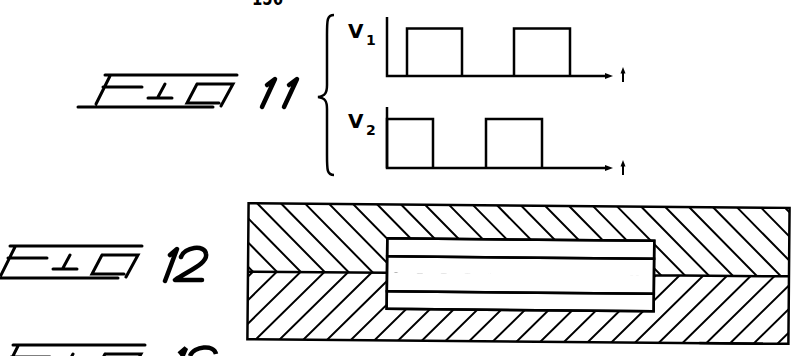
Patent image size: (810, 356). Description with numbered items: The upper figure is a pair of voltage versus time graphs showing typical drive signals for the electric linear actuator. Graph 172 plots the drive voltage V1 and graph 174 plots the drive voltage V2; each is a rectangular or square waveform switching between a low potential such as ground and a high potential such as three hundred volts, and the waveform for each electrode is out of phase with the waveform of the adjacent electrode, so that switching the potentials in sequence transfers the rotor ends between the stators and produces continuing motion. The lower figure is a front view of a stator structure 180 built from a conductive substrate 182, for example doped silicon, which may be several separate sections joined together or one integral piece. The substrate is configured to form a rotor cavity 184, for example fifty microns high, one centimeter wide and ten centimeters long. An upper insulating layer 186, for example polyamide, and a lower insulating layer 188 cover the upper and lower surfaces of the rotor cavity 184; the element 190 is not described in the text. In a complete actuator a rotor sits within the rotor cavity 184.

In FIG. 11, the graph 172 is at (633, 23).
In FIG. 11, the graph 174 is at (633, 115).
In FIG. 12, the stator structure 180 is at (254, 194).
In FIG. 12, the conductive substrate 182 is at (248, 226).
In FIG. 12, the rotor cavity 184 is at (421, 264).
In FIG. 12, the upper insulating layer 186 is at (488, 248).
In FIG. 12, the lower insulating layer 188 is at (428, 300).
In FIG. 12, the housing bottom wall 190 is at (743, 349).